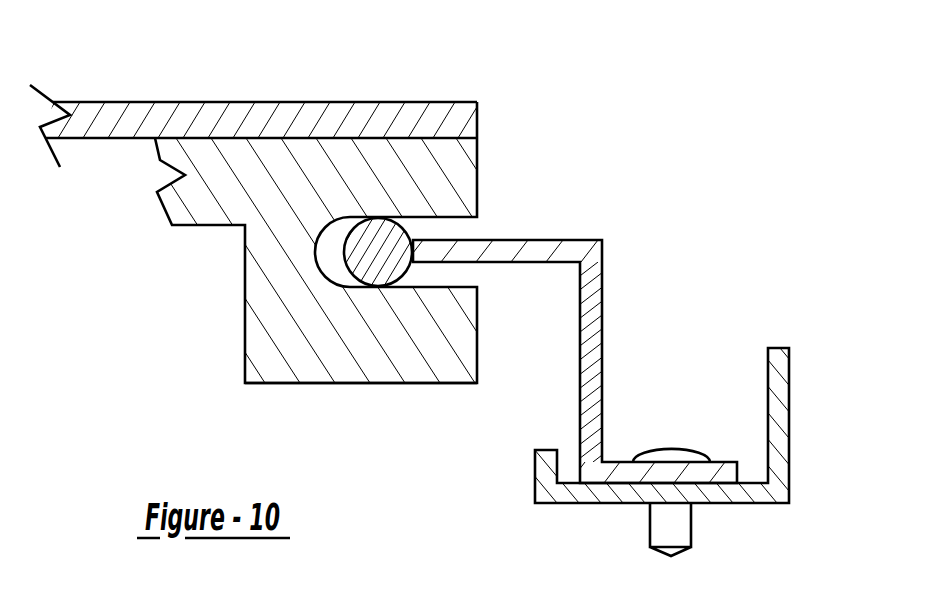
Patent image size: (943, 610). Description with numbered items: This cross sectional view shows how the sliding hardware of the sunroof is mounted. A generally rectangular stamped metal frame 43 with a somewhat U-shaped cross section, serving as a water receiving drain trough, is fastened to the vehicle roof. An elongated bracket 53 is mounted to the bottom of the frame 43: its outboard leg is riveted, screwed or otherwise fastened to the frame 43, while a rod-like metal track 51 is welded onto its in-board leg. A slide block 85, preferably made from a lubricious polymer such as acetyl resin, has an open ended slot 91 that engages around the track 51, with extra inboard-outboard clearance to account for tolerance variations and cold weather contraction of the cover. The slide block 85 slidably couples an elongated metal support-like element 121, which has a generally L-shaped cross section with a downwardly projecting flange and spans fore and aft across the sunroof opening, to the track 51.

The support-like element 121 is at (170, 124).
The track 51 is at (385, 255).
The open ended slot 91 is at (467, 218).
The bracket 53 is at (602, 358).
The frame 43 is at (778, 412).
The slide block 85 is at (385, 383).